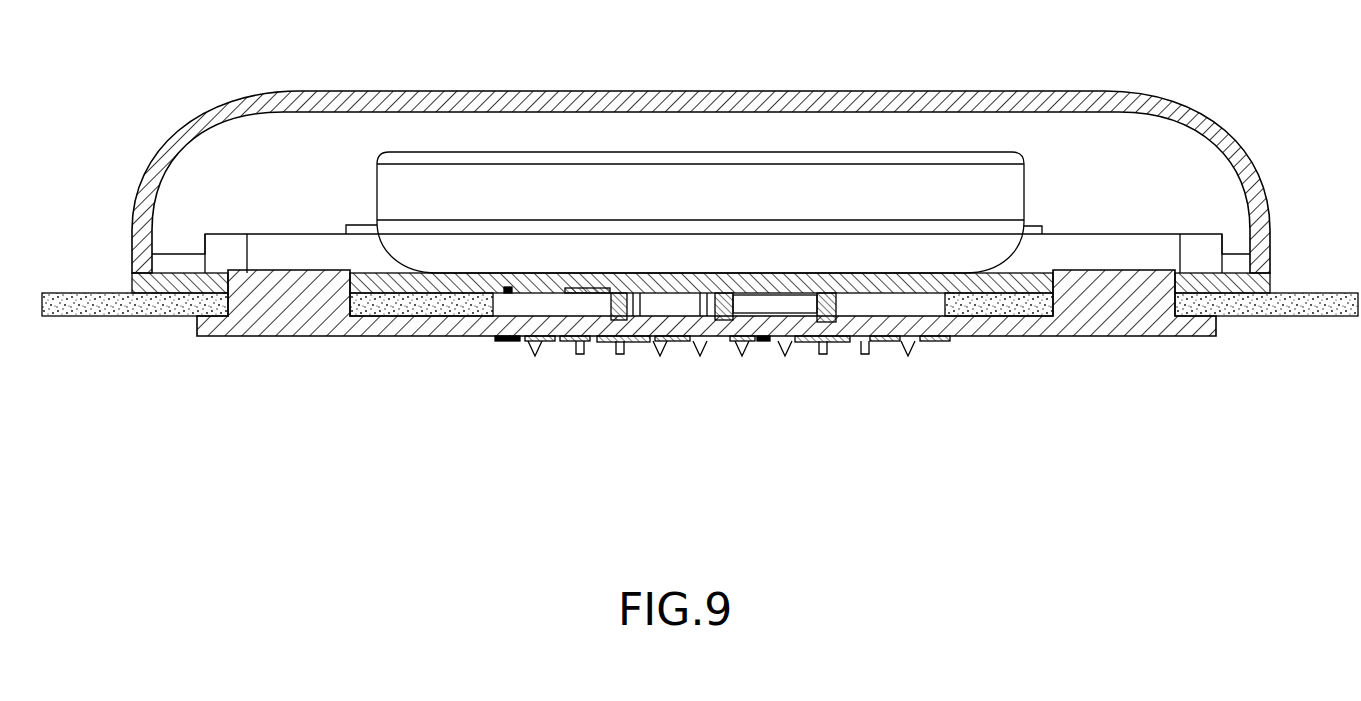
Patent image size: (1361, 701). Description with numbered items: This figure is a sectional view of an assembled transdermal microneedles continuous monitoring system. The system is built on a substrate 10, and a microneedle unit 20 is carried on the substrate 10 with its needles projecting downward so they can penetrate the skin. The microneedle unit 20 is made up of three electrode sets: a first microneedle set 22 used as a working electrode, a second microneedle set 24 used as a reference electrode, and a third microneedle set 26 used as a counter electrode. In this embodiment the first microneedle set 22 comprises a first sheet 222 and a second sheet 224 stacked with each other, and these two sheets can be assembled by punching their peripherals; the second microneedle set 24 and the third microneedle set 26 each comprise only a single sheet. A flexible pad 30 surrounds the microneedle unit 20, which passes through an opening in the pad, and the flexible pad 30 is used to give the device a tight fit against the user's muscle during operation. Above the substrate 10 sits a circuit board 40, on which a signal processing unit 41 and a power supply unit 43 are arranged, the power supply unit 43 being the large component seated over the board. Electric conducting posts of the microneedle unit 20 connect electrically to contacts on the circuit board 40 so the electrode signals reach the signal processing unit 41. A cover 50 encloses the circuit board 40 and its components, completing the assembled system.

The substrate 10 is at (1112, 325).
The microneedle unit 20 is at (838, 352).
The first microneedle set 22 is at (711, 389).
The first sheet 222 is at (640, 341).
The second sheet 224 is at (610, 341).
The second microneedle set 24 is at (510, 341).
The third microneedle set 26 is at (940, 341).
The flexible pad 30 is at (1296, 313).
The circuit board 40 is at (1272, 287).
The signal processing unit 41 is at (1093, 257).
The power supply unit 43 is at (712, 190).
The cover 50 is at (862, 100).